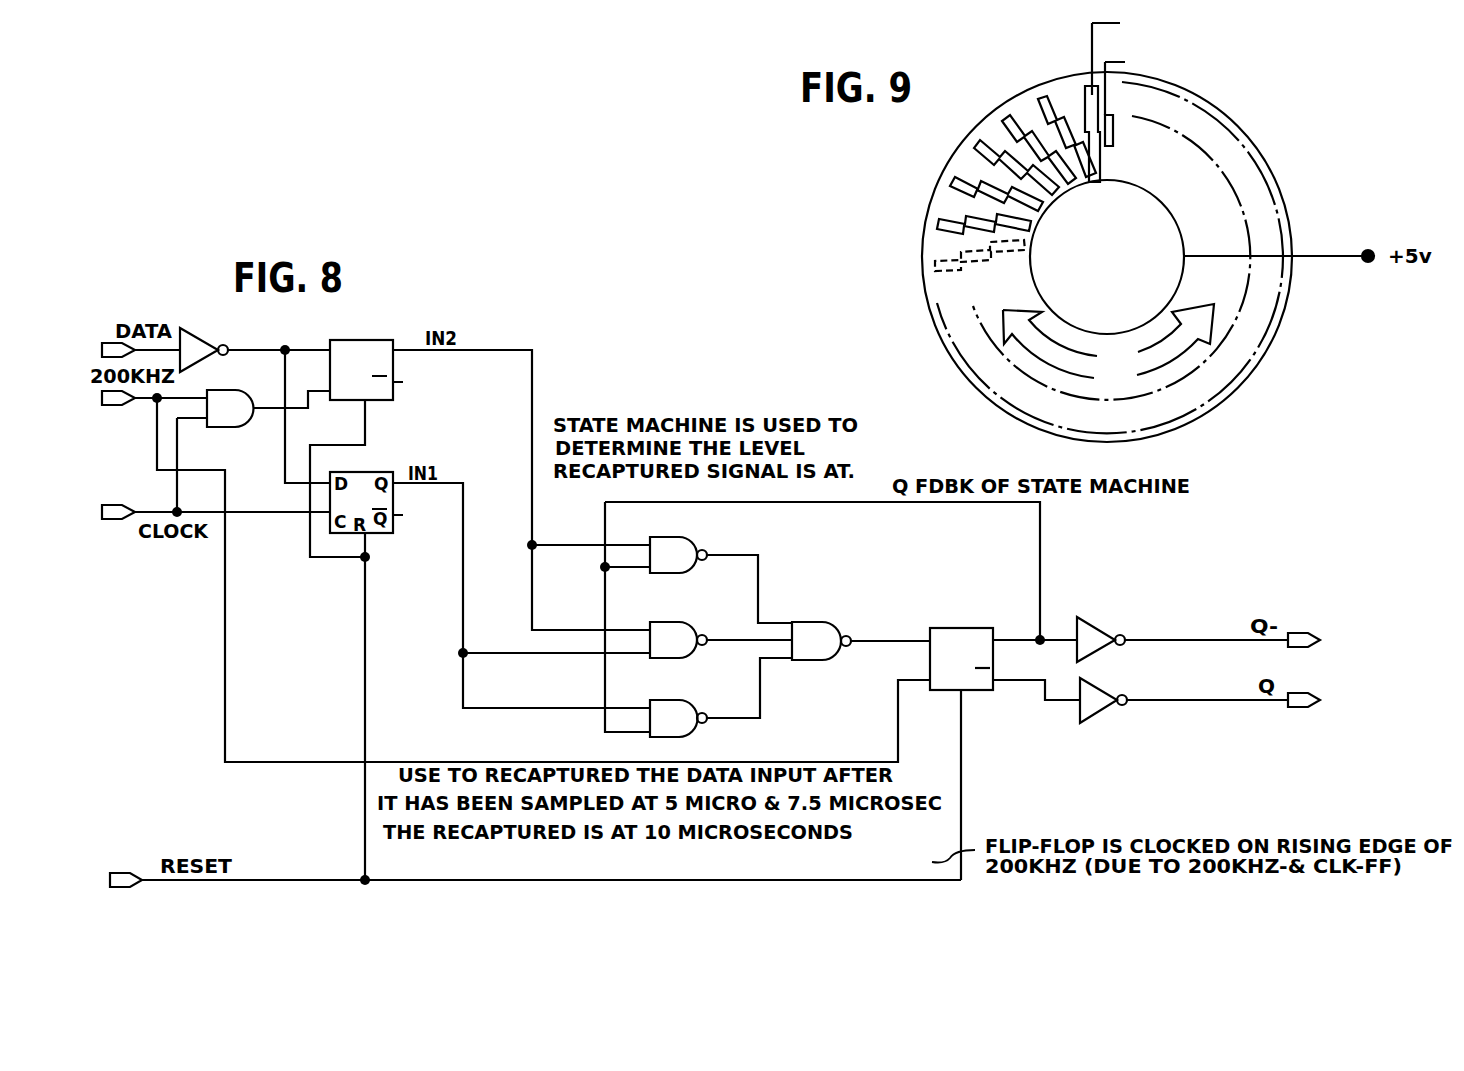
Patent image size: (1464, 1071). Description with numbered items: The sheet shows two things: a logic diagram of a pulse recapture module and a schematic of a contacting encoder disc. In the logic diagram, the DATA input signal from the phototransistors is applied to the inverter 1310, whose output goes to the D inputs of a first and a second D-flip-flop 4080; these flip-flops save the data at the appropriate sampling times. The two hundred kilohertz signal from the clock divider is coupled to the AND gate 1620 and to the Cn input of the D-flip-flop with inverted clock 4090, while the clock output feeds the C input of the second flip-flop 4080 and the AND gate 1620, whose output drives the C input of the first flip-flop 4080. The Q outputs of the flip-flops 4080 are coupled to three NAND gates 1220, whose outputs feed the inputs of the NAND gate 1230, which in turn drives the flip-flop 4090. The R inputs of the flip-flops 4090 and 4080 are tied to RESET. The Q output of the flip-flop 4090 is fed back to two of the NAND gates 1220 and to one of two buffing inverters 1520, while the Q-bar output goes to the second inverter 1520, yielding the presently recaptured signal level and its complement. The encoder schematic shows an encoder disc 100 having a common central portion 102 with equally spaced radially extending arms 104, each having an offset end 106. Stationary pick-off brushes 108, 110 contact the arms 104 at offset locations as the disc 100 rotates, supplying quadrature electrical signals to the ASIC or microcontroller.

In FIG. 9, the encoder disc 100 is at (1300, 308).
In FIG. 9, the central portion 102 is at (1183, 236).
In FIG. 9, the radially extending arms 104 is at (966, 180).
In FIG. 9, the offset end 106 is at (955, 192).
In FIG. 9, the pick-off brush 108 is at (1092, 50).
In FIG. 9, the pick-off brush 110 is at (1110, 122).
In FIG. 8, the inverter 1310 is at (224, 354).
In FIG. 8, the AND gate 1620 is at (243, 420).
In FIG. 8, the D-flip-flop 4080 is at (381, 382).
In FIG. 8, the NAND gate 1220 is at (706, 642).
In FIG. 8, the NAND gate 1230 is at (837, 653).
In FIG. 8, the D-flip-flop with inverted clock 4090 is at (977, 672).
In FIG. 8, the buffing inverter 1520 is at (1121, 674).